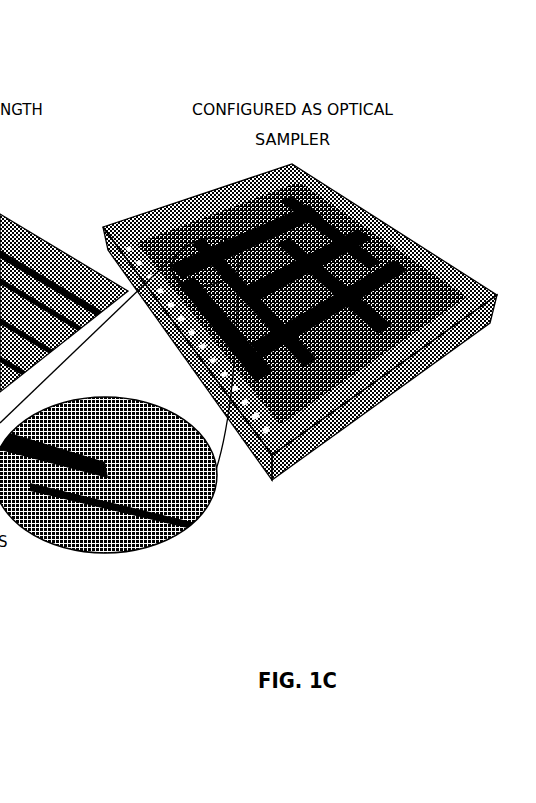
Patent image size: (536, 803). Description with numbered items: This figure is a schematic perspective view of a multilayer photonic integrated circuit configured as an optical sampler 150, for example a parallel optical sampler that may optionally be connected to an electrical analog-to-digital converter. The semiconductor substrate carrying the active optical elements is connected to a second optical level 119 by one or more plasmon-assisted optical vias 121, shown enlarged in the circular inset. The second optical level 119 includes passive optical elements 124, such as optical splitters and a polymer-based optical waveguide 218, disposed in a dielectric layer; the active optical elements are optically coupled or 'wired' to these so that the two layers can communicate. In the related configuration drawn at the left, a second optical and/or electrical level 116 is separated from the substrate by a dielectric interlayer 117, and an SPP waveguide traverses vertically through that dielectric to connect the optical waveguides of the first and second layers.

The optical sampler 150 is at (257, 280).
The second optical and/or electrical level 116 is at (7, 209).
The dielectric interlayer 117 is at (32, 238).
The second optical level 119 is at (425, 248).
The passive optical elements 124 is at (372, 354).
The plasmon-assisted optical via 121 is at (117, 485).
The polymer-based optical waveguide 218 is at (55, 478).